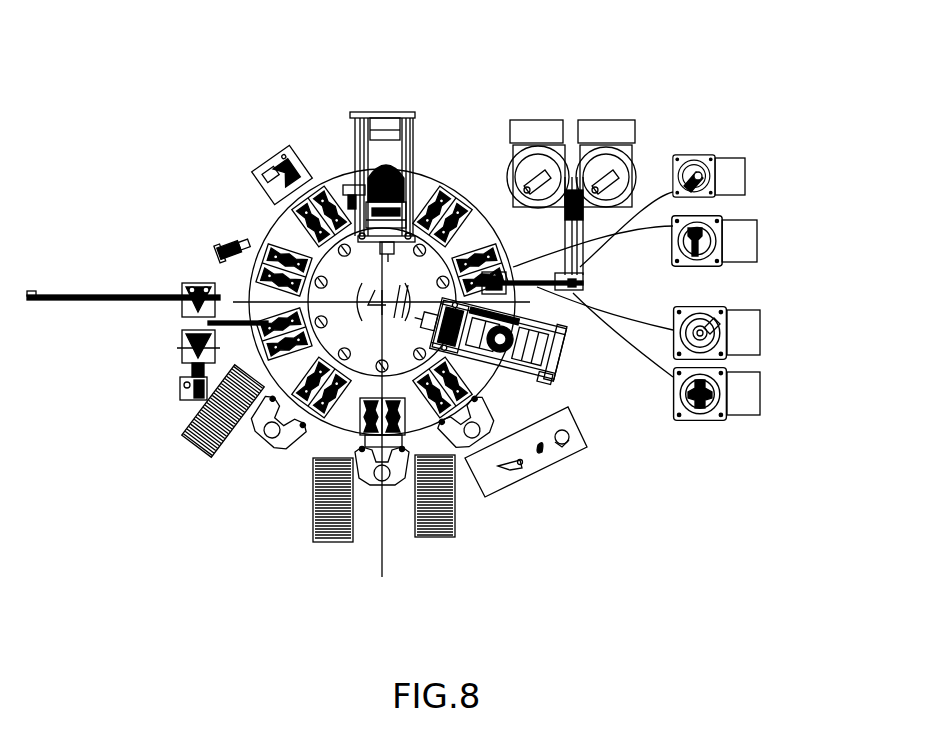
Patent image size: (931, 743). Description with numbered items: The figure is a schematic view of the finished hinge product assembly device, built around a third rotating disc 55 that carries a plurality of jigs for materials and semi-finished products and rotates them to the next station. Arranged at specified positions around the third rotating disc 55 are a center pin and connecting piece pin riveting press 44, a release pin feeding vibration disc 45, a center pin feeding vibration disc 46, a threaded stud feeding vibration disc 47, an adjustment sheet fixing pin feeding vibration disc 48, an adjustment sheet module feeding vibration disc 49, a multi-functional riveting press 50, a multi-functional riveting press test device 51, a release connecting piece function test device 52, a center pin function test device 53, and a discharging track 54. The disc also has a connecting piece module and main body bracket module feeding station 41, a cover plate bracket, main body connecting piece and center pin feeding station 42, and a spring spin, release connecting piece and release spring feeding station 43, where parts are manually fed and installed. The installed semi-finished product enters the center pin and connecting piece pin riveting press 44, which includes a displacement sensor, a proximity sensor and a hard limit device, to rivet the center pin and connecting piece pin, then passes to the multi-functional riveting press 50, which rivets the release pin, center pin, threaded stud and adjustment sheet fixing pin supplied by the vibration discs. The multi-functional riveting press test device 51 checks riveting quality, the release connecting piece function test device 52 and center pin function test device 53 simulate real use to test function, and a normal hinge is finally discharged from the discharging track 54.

The connecting piece module and main body bracket module feeding station 41 is at (265, 438).
The cover plate bracket, main body connecting piece and center pin feeding station 42 is at (382, 485).
The spring spin, release connecting piece and release spring feeding station 43 is at (522, 468).
The center pin and connecting piece pin riveting press 44 is at (537, 290).
The release pin feeding vibration disc 45 is at (760, 395).
The center pin feeding vibration disc 46 is at (760, 337).
The threaded stud feeding vibration disc 47 is at (757, 245).
The adjustment sheet fixing pin feeding vibration disc 48 is at (745, 176).
The adjustment sheet module feeding vibration disc 49 is at (592, 135).
The multi-functional riveting press 50 is at (390, 127).
The multi-functional riveting press test device 51 is at (273, 167).
The release connecting piece function test device 52 is at (223, 243).
The center pin function test device 53 is at (180, 388).
The discharging track 54 is at (162, 295).
The third rotating disc 55 is at (345, 183).